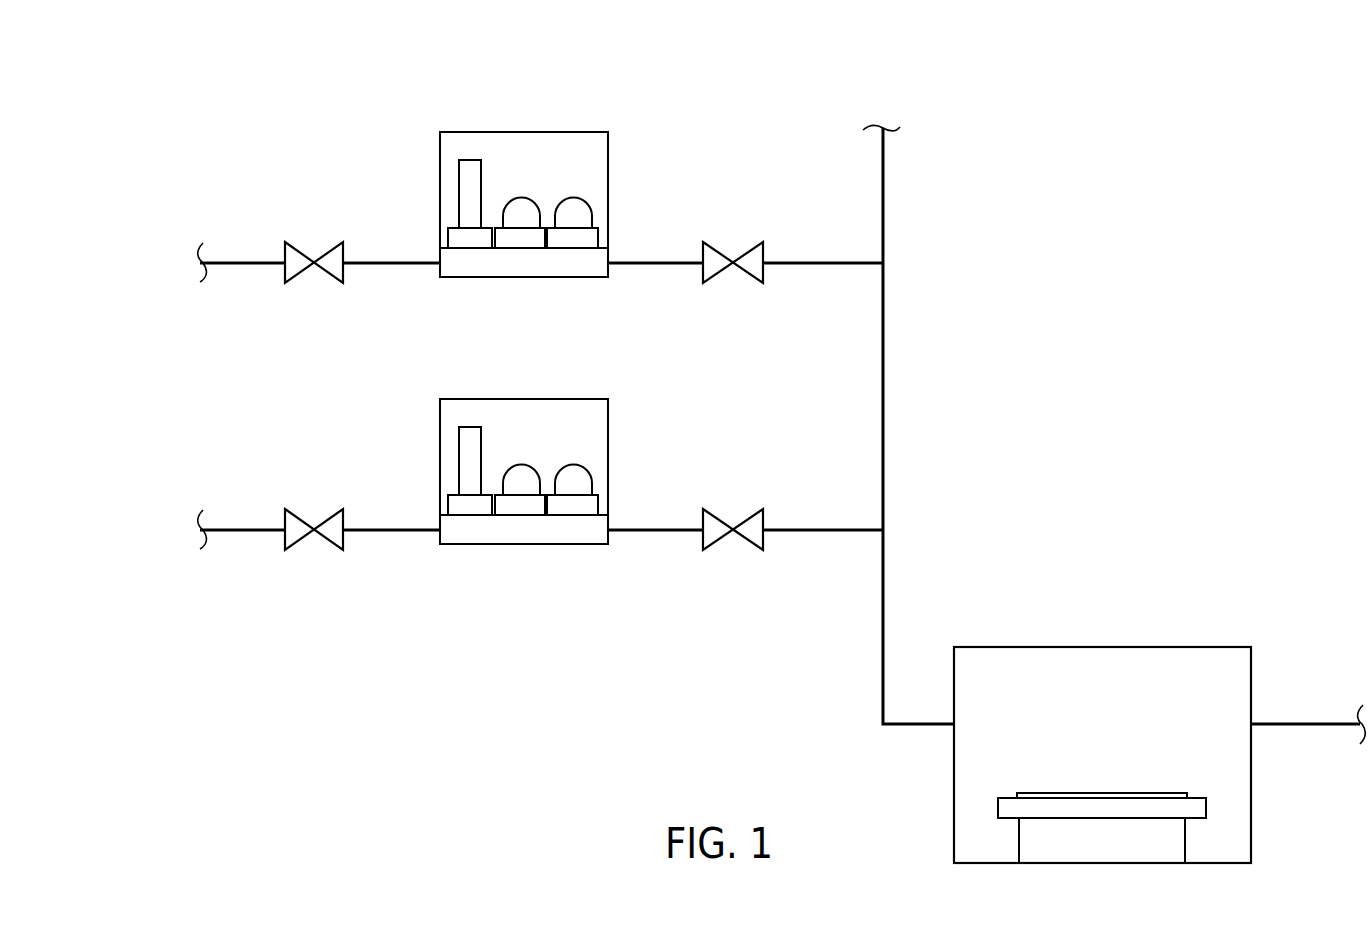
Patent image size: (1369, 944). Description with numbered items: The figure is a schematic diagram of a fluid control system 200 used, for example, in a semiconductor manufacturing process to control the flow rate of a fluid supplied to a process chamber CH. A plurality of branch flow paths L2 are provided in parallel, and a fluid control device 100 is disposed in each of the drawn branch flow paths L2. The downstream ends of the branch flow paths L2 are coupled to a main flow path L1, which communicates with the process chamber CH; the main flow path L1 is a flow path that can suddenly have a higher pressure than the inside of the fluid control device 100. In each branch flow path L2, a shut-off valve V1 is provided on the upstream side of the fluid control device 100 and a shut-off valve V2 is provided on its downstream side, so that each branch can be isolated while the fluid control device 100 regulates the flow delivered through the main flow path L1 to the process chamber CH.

The fluid control system 200 is at (170, 135).
The fluid control device 100 is at (522, 131).
The shut-off valve V1 is at (302, 245).
The shut-off valve V2 is at (720, 245).
The main flow path L1 is at (884, 360).
The branch flow path L2 is at (242, 265).
The process chamber CH is at (1102, 645).